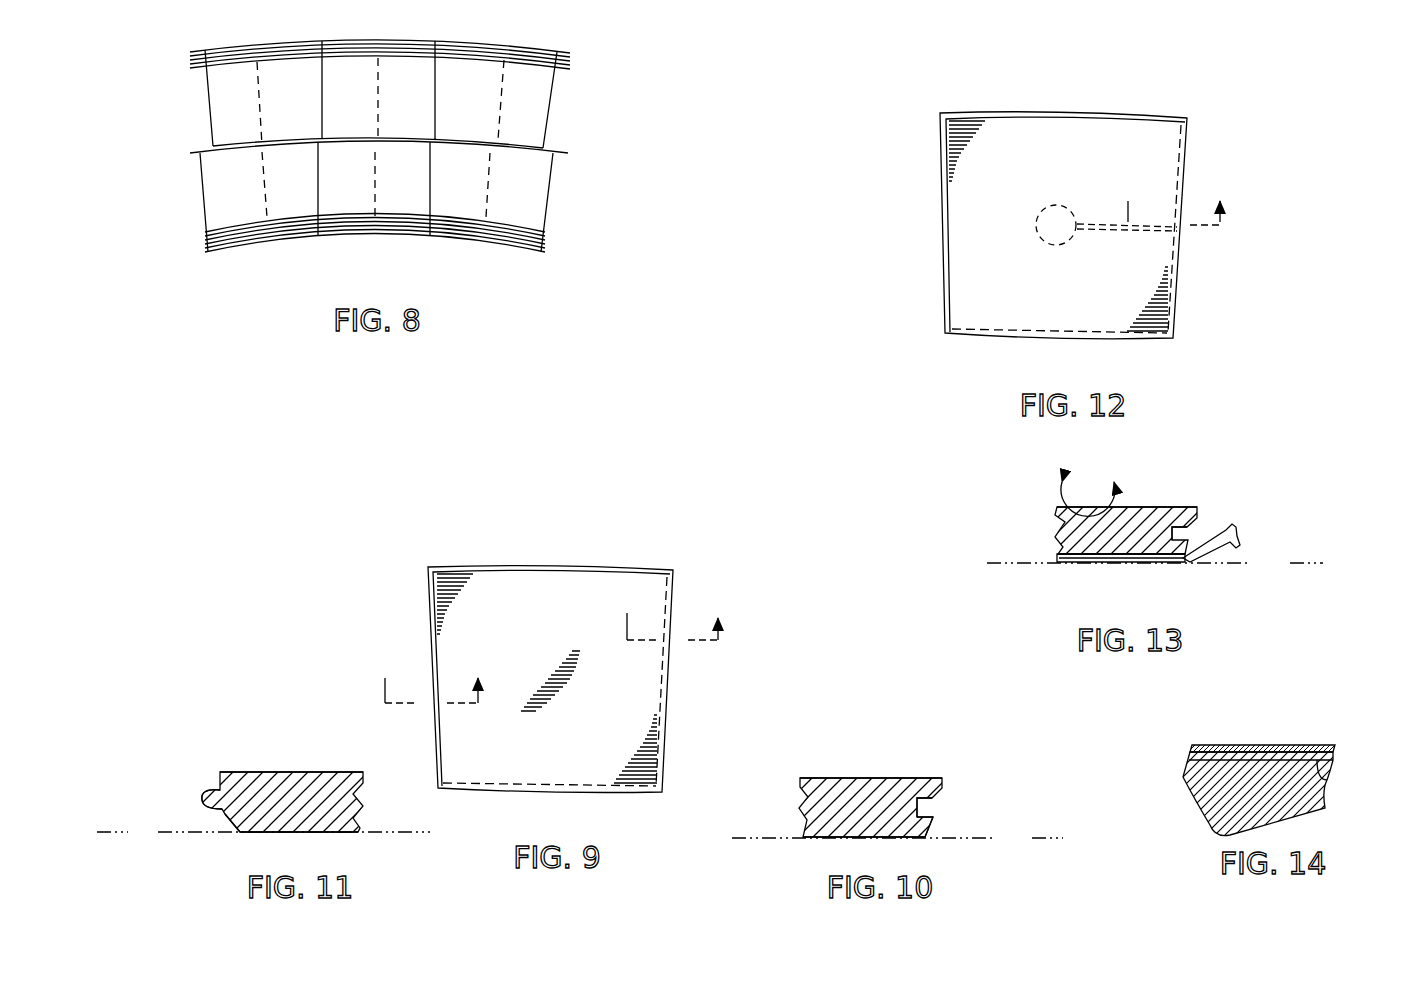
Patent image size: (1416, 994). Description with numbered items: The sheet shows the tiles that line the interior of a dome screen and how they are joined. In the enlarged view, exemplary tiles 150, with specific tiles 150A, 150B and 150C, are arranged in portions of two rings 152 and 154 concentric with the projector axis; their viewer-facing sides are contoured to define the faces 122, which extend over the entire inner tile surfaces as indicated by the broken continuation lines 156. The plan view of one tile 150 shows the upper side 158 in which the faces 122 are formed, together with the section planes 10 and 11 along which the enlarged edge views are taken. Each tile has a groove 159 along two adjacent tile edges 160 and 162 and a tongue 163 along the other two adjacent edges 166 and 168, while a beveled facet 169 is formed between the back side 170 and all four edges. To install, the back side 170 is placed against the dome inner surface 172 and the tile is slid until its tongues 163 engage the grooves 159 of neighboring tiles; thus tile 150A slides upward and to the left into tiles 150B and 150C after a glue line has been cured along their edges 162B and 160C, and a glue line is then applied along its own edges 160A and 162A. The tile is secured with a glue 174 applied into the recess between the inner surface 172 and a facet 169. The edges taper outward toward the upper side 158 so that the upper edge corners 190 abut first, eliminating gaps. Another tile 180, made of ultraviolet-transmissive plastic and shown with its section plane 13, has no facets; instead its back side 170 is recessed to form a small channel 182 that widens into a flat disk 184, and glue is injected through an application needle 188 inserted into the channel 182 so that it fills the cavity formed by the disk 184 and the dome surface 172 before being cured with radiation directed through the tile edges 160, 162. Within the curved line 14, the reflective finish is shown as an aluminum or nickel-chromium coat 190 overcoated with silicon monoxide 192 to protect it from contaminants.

In FIG. 9, the section plane 10— 10 is at (674, 613).
In FIG. 9, the section plane 11— 11 is at (433, 676).
In FIG. 12, the section plane 13— 13 is at (1176, 198).
In FIG. 13, the curved line 14 is at (1088, 484).
In FIG. 8, the face 122 is at (212, 72).
In FIG. 12, the face 122 is at (958, 178).
In FIG. 9, the face 122 is at (650, 712).
In FIG. 8, the tile 150 is at (220, 98).
In FIG. 9, the tile 150 is at (546, 668).
In FIG. 8, the tile 150A is at (547, 188).
In FIG. 8, the tile 150B is at (535, 90).
In FIG. 8, the tile 150C is at (358, 200).
In FIG. 8, the ring 152 is at (329, 202).
In FIG. 8, the ring 154 is at (332, 92).
In FIG. 8, the broken continuation line 156 is at (377, 101).
In FIG. 12, the upper side 158 is at (1085, 120).
In FIG. 9, the upper side 158 is at (573, 571).
In FIG. 11, the upper side 158 is at (277, 772).
In FIG. 10, the upper side 158 is at (893, 778).
In FIG. 13, the upper side 158 is at (1152, 507).
In FIG. 12, the groove 159 is at (1180, 145).
In FIG. 9, the groove 159 is at (665, 717).
In FIG. 10, the groove 159 is at (917, 807).
In FIG. 13, the groove 159 is at (1193, 528).
In FIG. 12, the tile edge 160 is at (1179, 315).
In FIG. 9, the tile edge 160 is at (667, 755).
In FIG. 8, the tile edge 160A is at (547, 230).
In FIG. 8, the tile edge 160C is at (452, 212).
In FIG. 12, the tile edge 162 is at (1153, 342).
In FIG. 9, the tile edge 162 is at (642, 795).
In FIG. 8, the tile edge 162A is at (530, 252).
In FIG. 8, the tile edge 162B is at (548, 155).
In FIG. 12, the tongue 163 is at (993, 113).
In FIG. 9, the tongue 163 is at (482, 565).
In FIG. 11, the tongue 163 is at (203, 797).
In FIG. 12, the tile edge 166 is at (935, 127).
In FIG. 9, the tile edge 166 is at (423, 581).
In FIG. 12, the tile edge 168 is at (959, 110).
In FIG. 9, the tile edge 168 is at (447, 562).
In FIG. 11, the beveled facet 169 is at (235, 826).
In FIG. 10, the beveled facet 169 is at (925, 840).
In FIG. 11, the back side 170 is at (327, 833).
In FIG. 10, the back side 170 is at (847, 838).
In FIG. 13, the back side 170 is at (1113, 562).
In FIG. 11, the dome inner surface 172 is at (263, 832).
In FIG. 10, the dome inner surface 172 is at (897, 838).
In FIG. 13, the dome inner surface 172 is at (1155, 563).
In FIG. 10, the glue 174 is at (937, 828).
In FIG. 12, the tile 180 is at (1061, 217).
In FIG. 12, the channel 182 is at (1133, 228).
In FIG. 13, the channel 182 is at (1092, 562).
In FIG. 12, the flat disk 184 is at (1035, 225).
In FIG. 13, the application needle 188 is at (1218, 553).
In FIG. 11, the upper edge corner 190 is at (266, 790).
In FIG. 10, the upper edge corner 190 is at (895, 795).
In FIG. 13, the upper edge corner 190 is at (1164, 533).
In FIG. 14, the upper edge corner 190 is at (1327, 777).
In FIG. 14, the silicon monoxide overcoat 192 is at (1318, 745).